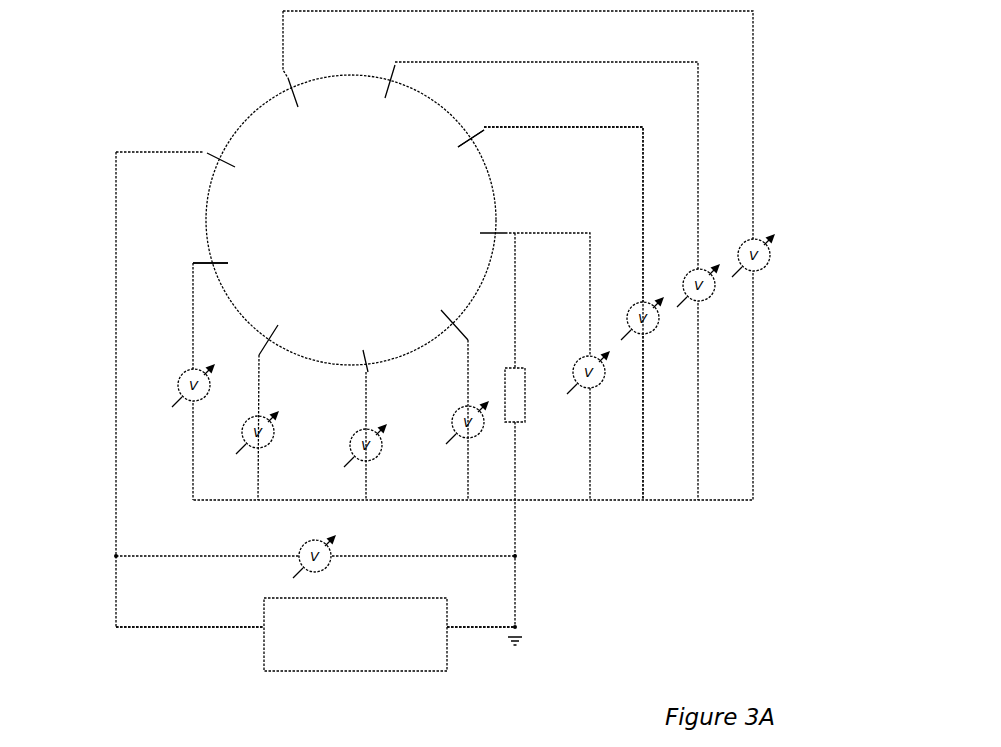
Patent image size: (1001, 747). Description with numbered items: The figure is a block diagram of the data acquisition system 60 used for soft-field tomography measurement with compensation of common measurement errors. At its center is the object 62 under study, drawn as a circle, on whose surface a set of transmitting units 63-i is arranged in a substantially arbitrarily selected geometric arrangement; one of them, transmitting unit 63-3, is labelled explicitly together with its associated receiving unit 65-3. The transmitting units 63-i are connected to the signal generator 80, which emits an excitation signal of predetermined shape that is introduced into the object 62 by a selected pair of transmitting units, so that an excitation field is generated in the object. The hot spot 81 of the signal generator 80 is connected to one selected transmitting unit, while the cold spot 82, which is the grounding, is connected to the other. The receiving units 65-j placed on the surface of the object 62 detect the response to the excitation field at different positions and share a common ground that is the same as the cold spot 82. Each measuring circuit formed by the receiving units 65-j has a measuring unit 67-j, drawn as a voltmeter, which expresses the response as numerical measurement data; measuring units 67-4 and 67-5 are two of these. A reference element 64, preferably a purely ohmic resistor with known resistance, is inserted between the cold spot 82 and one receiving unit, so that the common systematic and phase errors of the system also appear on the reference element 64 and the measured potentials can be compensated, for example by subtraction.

The data acquisition system 60 is at (132, 77).
The object under study 62 is at (350, 276).
The transmitting unit 63-3 is at (487, 129).
The receiving unit 65-3 is at (563, 313).
The transmitting units 63-i is at (208, 260).
The receiving units 65-j is at (163, 357).
The measuring units 67-j is at (180, 385).
The measuring unit 67-4 is at (706, 296).
The measuring unit 67-5 is at (761, 262).
The reference element 64 is at (517, 400).
The signal generator 80 is at (355, 634).
The hot spot 81 is at (224, 628).
The cold spot 82 is at (465, 628).